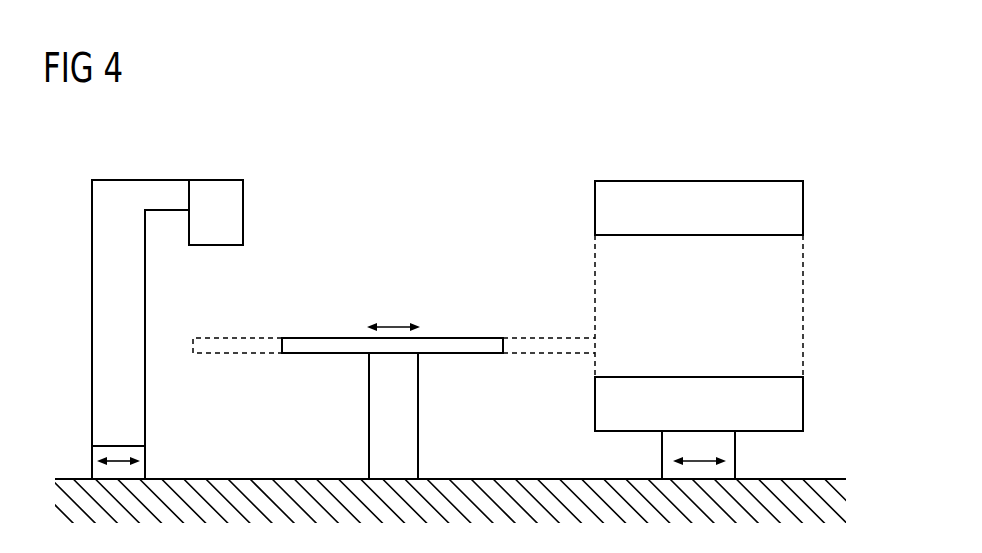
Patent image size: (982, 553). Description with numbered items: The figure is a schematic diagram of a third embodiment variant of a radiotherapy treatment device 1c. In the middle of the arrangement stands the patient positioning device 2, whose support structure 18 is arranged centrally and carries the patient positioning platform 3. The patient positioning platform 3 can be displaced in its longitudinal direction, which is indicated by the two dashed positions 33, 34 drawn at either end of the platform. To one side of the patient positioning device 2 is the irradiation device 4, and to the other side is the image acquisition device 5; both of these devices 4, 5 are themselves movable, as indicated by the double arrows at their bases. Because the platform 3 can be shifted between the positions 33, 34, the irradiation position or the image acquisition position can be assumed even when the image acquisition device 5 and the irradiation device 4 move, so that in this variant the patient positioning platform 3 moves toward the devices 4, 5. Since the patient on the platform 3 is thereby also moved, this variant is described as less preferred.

The irradiation device 4 is at (102, 172).
The radiotherapy treatment device 1c is at (710, 293).
The image acquisition device 5 is at (808, 263).
The patient positioning device 2 is at (392, 362).
The patient positioning platform 3 is at (322, 345).
The support structure 18 is at (377, 433).
The position 33 is at (242, 345).
The position 34 is at (553, 343).